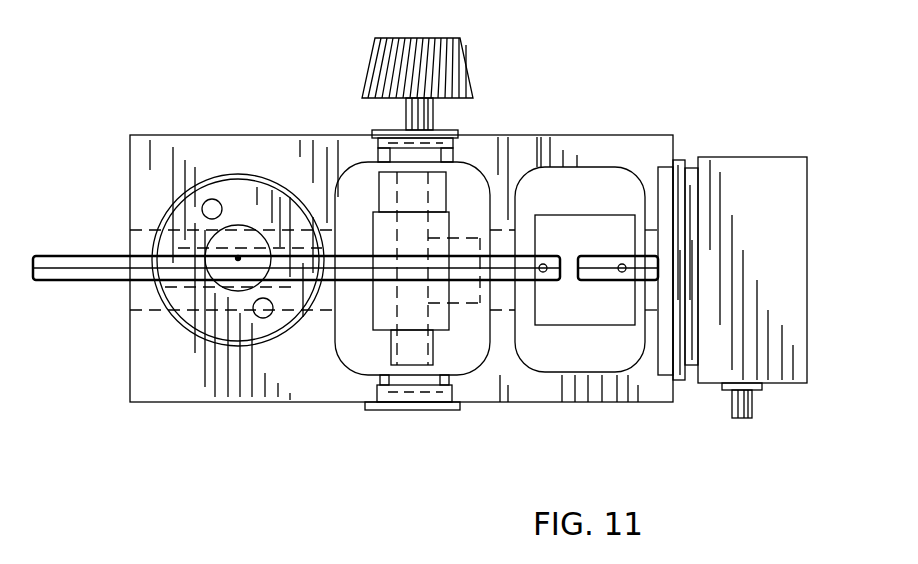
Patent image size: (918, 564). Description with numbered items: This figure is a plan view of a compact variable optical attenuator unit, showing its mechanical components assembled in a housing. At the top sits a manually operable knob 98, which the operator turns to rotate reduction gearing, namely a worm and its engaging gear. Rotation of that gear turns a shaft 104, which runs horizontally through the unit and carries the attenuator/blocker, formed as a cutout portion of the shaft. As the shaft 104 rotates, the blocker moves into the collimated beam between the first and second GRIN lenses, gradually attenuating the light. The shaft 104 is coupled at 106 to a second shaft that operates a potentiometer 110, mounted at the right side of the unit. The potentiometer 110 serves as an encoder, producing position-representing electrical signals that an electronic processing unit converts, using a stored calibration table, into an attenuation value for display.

The manually operable knob 98 is at (473, 70).
The shaft 104 is at (88, 267).
The coupling 106 is at (575, 307).
The potentiometer 110 is at (765, 198).